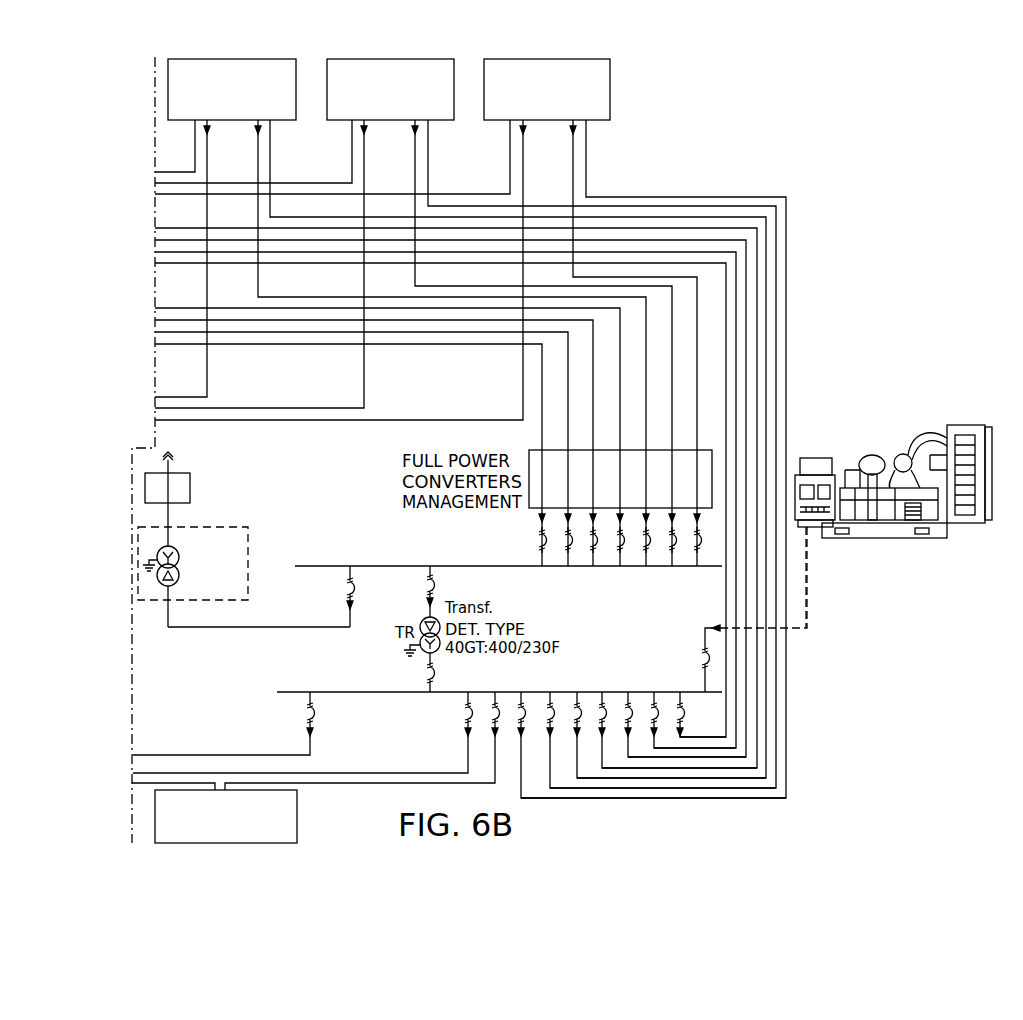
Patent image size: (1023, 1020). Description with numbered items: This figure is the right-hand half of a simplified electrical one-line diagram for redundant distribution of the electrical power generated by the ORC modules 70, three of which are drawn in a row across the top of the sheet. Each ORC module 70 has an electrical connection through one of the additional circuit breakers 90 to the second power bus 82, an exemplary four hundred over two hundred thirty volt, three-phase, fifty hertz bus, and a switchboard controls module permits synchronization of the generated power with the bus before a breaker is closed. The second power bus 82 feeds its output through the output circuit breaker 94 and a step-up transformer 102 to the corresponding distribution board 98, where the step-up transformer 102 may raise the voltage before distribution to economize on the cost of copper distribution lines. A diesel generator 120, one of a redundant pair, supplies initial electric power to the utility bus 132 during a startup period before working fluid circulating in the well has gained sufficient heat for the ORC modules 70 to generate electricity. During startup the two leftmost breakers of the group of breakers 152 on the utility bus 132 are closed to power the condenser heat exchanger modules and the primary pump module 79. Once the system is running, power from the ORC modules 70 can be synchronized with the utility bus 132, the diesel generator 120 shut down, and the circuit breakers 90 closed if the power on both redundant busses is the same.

The ORC module 70 is at (169, 102).
The distribution board 98 is at (326, 452).
The second power bus 82 is at (352, 566).
The circuit breakers 90 is at (537, 547).
The output circuit breaker 94 is at (353, 608).
The step-up transformer 102 is at (196, 601).
The utility bus 132 is at (352, 693).
The group of breakers 152 is at (459, 722).
The primary pump module 79 is at (297, 822).
The diesel generator 120 is at (910, 424).